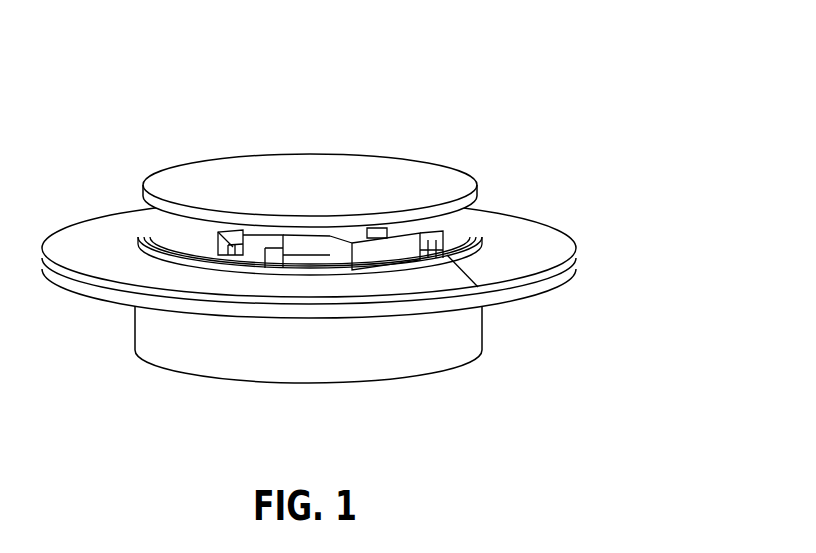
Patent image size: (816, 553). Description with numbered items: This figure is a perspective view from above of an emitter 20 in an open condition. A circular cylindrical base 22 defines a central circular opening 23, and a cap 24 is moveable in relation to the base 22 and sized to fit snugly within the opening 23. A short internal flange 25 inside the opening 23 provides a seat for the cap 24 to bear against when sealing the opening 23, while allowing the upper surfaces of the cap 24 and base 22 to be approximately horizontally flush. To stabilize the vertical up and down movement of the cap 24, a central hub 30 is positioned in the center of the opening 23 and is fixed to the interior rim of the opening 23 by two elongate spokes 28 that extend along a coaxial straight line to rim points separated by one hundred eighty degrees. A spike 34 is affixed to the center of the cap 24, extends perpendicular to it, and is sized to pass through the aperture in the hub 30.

The emitter 20 is at (351, 237).
The circular cylindrical base 22 is at (488, 335).
The central circular opening 23 is at (510, 288).
The cap 24 is at (203, 170).
The internal flange 25 is at (458, 213).
The elongate spokes 28 is at (395, 247).
The central hub 30 is at (300, 238).
The spike 34 is at (310, 248).